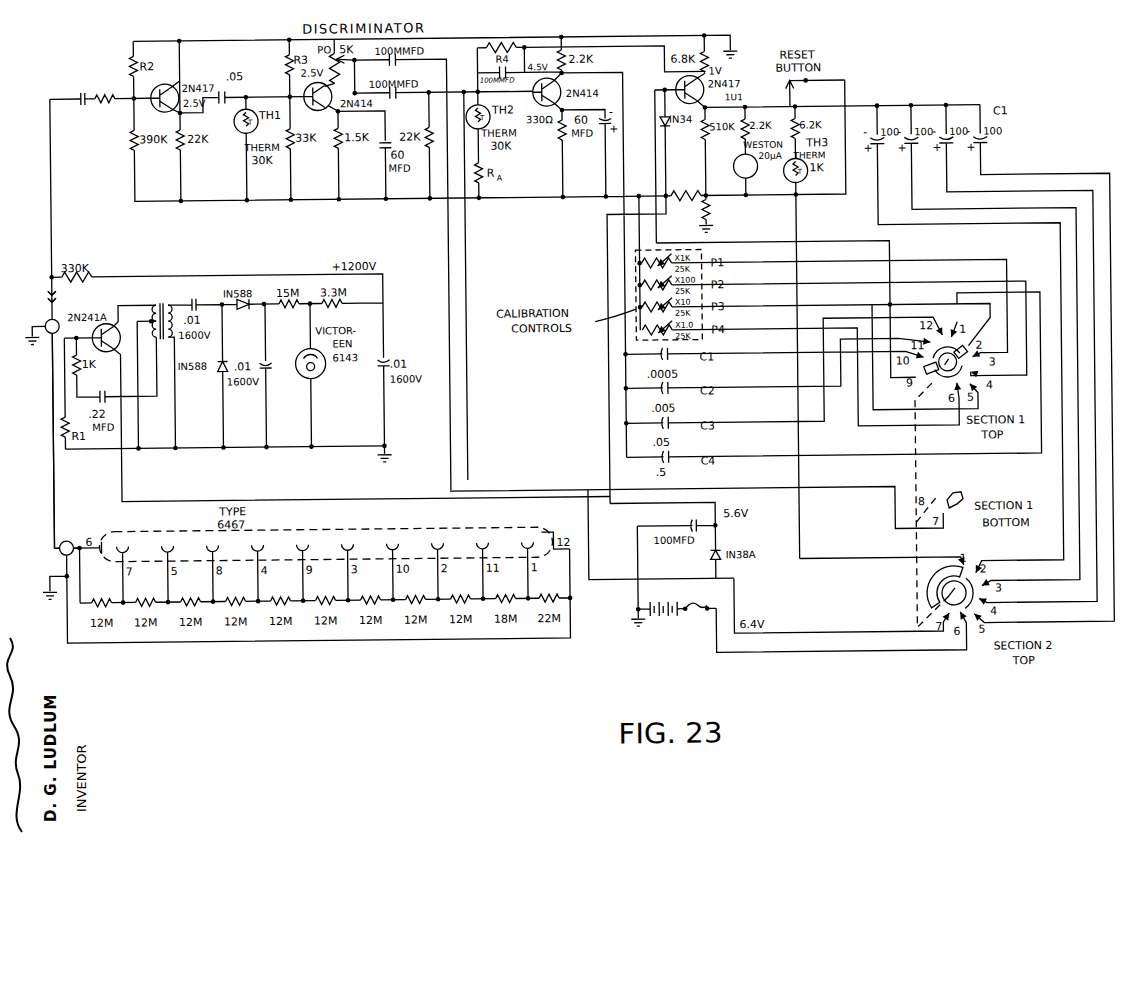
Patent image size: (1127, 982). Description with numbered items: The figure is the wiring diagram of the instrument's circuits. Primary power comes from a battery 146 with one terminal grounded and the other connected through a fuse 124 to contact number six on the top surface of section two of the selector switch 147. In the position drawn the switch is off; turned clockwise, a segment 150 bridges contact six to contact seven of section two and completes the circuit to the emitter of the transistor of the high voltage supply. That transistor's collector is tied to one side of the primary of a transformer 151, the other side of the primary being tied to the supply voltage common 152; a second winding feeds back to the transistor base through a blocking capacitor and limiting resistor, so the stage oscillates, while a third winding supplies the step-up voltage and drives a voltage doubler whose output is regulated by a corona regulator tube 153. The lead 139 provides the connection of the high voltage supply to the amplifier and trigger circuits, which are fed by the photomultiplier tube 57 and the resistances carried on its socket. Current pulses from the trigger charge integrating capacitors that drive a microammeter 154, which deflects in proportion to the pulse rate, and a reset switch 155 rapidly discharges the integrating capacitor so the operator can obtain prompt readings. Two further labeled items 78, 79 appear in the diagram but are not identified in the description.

The end window photomultiplier tube 57 is at (190, 528).
The input lead to electrometer 78 is at (53, 503).
The shielded coaxial connector 79 is at (47, 317).
The fuse 124 is at (690, 607).
The lead 139 is at (52, 274).
The battery 146 is at (662, 620).
The selector switch 147 is at (976, 563).
The segment 150 is at (961, 627).
The transformer 151 is at (160, 297).
The supply voltage common 152 is at (139, 427).
The corona regulator tube 153 is at (321, 366).
The microammeter 154 is at (738, 164).
The reset switch 155 is at (798, 88).